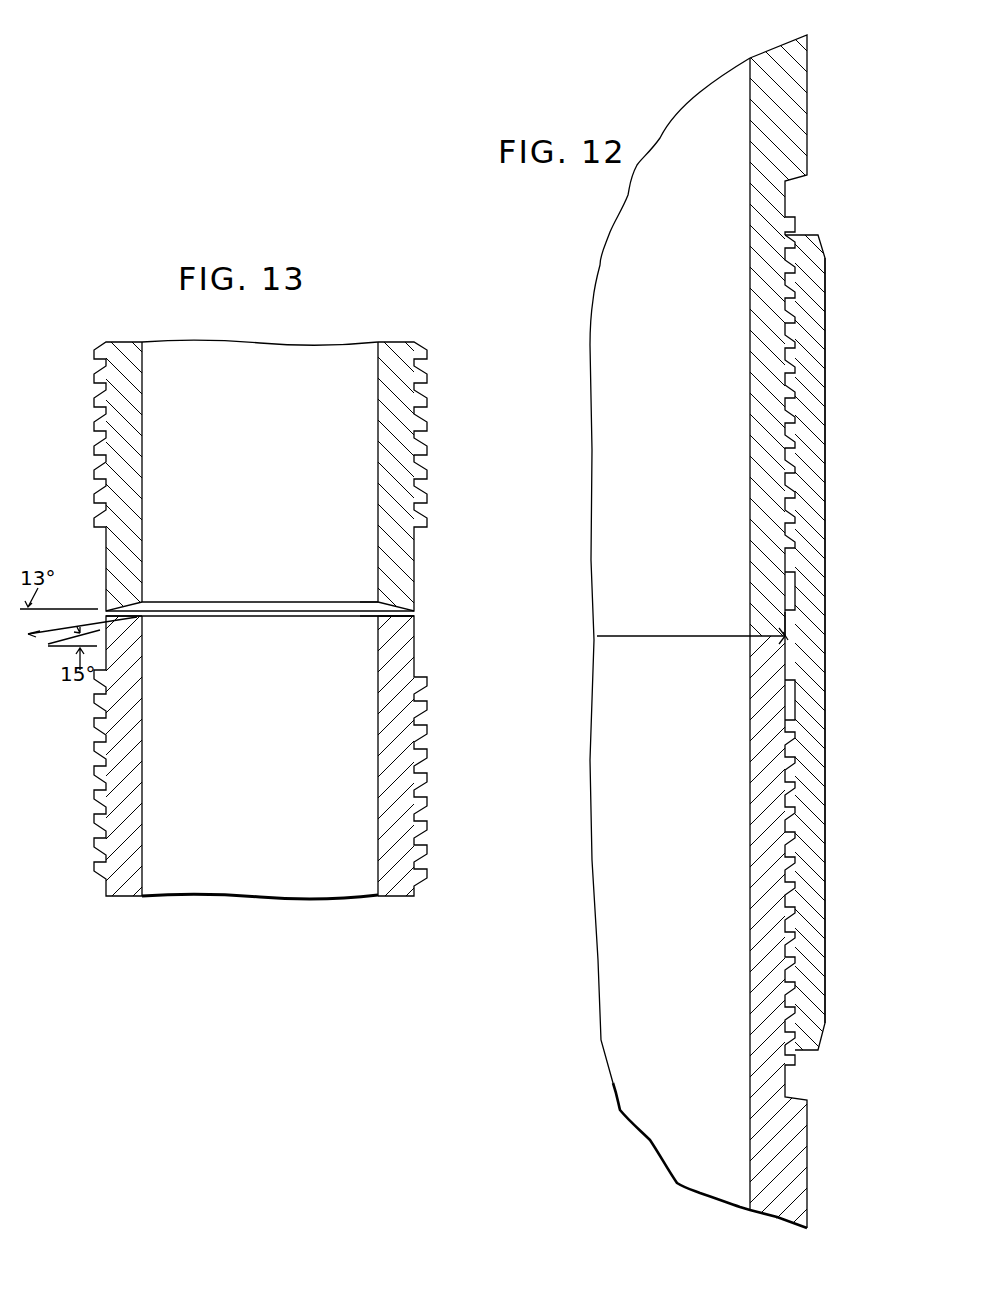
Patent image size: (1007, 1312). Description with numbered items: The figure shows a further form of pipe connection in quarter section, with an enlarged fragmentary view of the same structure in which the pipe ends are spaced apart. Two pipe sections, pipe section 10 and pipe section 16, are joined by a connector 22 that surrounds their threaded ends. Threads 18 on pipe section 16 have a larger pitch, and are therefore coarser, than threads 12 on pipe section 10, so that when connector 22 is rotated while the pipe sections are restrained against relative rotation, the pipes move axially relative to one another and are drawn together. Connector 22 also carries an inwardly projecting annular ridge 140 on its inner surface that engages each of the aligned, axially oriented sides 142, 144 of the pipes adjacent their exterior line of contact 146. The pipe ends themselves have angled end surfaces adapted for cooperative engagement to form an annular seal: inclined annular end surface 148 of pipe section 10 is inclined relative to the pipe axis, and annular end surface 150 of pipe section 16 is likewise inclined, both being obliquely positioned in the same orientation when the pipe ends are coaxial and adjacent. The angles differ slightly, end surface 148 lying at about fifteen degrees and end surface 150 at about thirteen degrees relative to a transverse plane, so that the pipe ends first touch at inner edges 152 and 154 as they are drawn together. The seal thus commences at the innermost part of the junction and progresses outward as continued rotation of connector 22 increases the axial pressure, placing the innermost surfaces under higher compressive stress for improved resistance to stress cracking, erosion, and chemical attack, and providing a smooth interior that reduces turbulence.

In FIG. 12, the pipe section 10 is at (795, 1140).
In FIG. 13, the pipe section 10 is at (403, 664).
In FIG. 12, the threads 12 is at (790, 828).
In FIG. 12, the pipe section 16 is at (795, 112).
In FIG. 13, the pipe section 16 is at (405, 485).
In FIG. 12, the threads 18 is at (792, 444).
In FIG. 12, the connector 22 is at (822, 775).
In FIG. 12, the annular ridge 140 is at (790, 620).
In FIG. 12, the axially oriented side 142 is at (778, 608).
In FIG. 12, the axially oriented side 144 is at (788, 700).
In FIG. 12, the exterior line of contact 146 is at (787, 637).
In FIG. 12, the inclined annular end surface 148 is at (782, 640).
In FIG. 13, the inclined annular end surface 148 is at (400, 628).
In FIG. 12, the annular end surface 150 is at (782, 636).
In FIG. 13, the annular end surface 150 is at (393, 607).
In FIG. 13, the inner edge 152 is at (372, 622).
In FIG. 13, the inner edge 154 is at (375, 600).